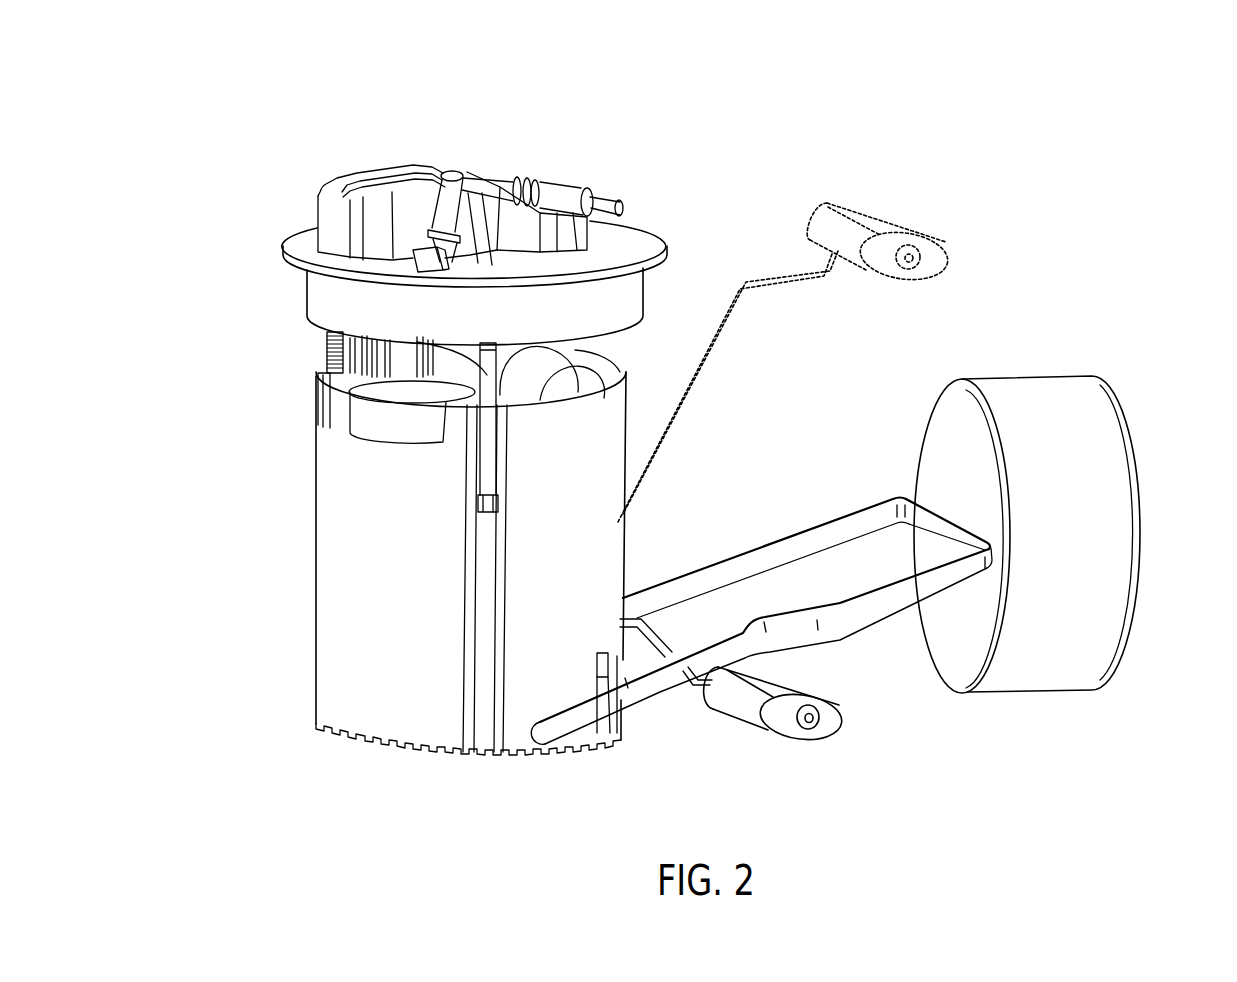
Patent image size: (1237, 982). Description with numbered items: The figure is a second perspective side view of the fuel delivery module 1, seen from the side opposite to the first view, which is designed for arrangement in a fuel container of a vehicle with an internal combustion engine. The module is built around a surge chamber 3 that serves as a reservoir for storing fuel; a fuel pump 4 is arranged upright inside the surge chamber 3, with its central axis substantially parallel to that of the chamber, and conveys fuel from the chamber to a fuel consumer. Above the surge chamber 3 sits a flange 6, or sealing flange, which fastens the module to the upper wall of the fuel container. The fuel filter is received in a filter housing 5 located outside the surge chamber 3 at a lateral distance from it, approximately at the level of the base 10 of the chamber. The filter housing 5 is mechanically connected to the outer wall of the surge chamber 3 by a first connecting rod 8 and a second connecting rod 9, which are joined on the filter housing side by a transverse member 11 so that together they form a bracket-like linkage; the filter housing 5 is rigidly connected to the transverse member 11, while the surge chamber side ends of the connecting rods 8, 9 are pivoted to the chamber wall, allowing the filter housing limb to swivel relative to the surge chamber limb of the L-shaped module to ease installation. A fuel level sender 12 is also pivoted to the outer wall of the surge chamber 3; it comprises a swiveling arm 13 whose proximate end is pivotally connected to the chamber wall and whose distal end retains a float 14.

The fuel delivery module 1 is at (200, 82).
The surge chamber 3 is at (328, 643).
The fuel pump 4 is at (404, 392).
The filter housing 5 is at (1100, 443).
The flange 6 is at (651, 245).
The first connecting rod 8 is at (820, 540).
The second connecting rod 9 is at (865, 610).
The base 10 is at (383, 752).
The transverse member 11 is at (933, 524).
The fuel level sender 12 is at (751, 205).
The swiveling arm 13 is at (742, 292).
The float 14 is at (934, 252).